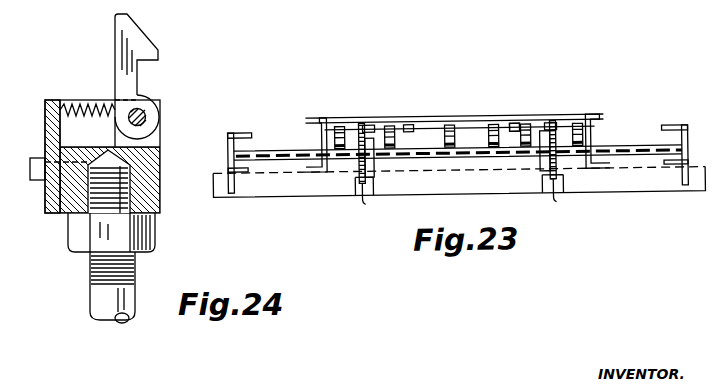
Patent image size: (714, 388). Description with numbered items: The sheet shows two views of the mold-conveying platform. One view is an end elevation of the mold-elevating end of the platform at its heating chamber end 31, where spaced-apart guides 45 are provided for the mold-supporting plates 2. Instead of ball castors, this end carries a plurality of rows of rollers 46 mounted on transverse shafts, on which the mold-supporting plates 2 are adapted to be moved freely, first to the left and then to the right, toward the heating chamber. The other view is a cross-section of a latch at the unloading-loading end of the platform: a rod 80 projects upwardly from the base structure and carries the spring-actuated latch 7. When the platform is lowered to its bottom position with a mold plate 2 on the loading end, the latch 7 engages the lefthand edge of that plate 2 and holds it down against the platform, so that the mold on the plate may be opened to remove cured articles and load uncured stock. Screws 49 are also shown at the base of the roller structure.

In FIG. 24, the spring-actuated latch 7 is at (115, 55).
In FIG. 24, the rod 80 is at (146, 118).
In FIG. 23, the mold-supporting plate 2 is at (422, 117).
In FIG. 23, the guides 45 is at (316, 116).
In FIG. 23, the rollers 46 is at (343, 124).
In FIG. 23, the heating chamber end 31 is at (535, 118).
In FIG. 23, the adjusting screw 49 is at (460, 173).